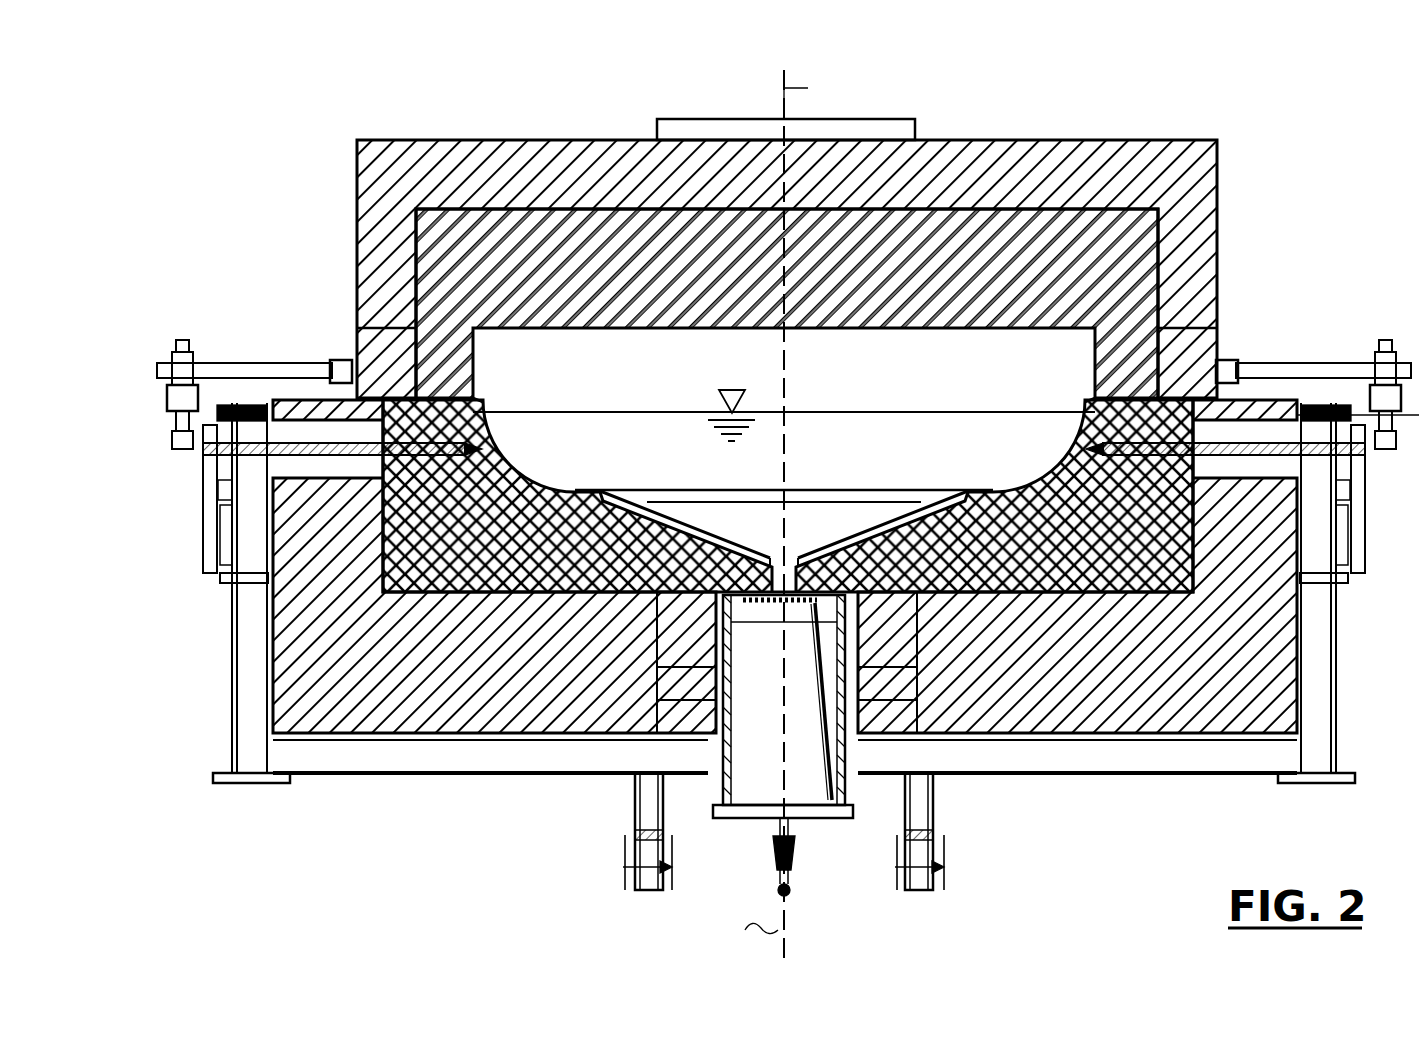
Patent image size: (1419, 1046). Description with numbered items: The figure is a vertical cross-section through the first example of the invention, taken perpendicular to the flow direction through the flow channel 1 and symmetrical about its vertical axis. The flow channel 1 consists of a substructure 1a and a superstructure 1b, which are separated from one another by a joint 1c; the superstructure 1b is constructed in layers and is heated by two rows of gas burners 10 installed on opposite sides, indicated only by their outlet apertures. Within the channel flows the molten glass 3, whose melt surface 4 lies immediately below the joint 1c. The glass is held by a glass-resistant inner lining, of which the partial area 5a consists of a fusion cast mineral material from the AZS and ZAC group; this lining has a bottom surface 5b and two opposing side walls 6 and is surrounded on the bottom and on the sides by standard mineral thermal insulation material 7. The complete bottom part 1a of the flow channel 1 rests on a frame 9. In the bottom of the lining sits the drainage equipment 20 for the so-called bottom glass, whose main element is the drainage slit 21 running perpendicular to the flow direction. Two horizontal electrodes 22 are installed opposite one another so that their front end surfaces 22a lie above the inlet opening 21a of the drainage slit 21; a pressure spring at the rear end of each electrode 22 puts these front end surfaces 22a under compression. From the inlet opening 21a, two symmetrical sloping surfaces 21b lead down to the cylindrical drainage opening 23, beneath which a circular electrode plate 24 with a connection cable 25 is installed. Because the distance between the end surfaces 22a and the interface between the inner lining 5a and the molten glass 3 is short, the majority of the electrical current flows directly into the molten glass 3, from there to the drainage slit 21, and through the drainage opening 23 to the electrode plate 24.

The flow channel 1 is at (1300, 122).
The substructure 1a is at (142, 402).
The superstructure 1b is at (158, 397).
The joint 1c is at (408, 392).
The molten glass 3 is at (840, 466).
The melt surface 4 is at (731, 386).
The inner lining partial area 5a is at (532, 488).
The bottom surface 5b is at (583, 486).
The side walls 6 is at (497, 424).
The thermal insulation material 7 is at (402, 712).
The frame 9 is at (315, 760).
The gas burners 10 is at (332, 362).
The drainage equipment 20 is at (718, 850).
The drainage slit 21 is at (823, 541).
The inlet opening 21a is at (867, 484).
The sloping surfaces 21b is at (690, 516).
The horizontal electrodes 22 is at (300, 438).
The front end surfaces 22a is at (512, 447).
The drainage opening 23 is at (760, 618).
The electrode plate 24 is at (796, 606).
The connection cable 25 is at (810, 762).